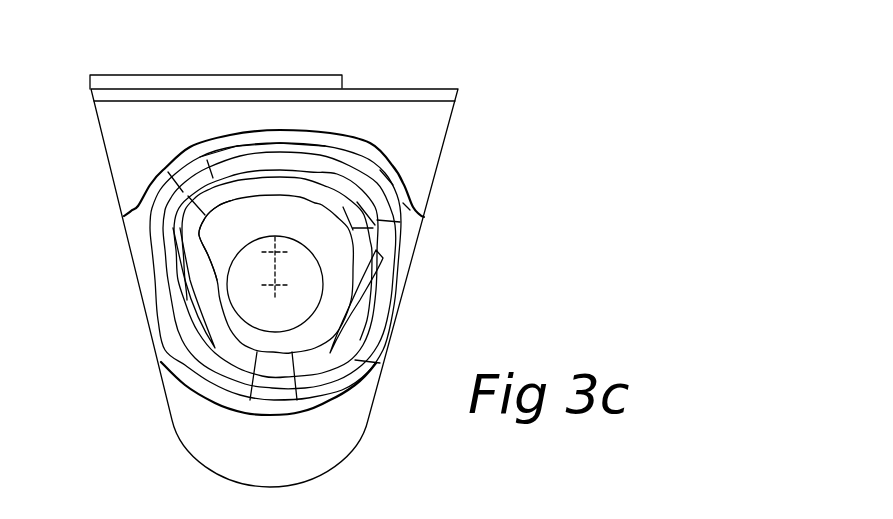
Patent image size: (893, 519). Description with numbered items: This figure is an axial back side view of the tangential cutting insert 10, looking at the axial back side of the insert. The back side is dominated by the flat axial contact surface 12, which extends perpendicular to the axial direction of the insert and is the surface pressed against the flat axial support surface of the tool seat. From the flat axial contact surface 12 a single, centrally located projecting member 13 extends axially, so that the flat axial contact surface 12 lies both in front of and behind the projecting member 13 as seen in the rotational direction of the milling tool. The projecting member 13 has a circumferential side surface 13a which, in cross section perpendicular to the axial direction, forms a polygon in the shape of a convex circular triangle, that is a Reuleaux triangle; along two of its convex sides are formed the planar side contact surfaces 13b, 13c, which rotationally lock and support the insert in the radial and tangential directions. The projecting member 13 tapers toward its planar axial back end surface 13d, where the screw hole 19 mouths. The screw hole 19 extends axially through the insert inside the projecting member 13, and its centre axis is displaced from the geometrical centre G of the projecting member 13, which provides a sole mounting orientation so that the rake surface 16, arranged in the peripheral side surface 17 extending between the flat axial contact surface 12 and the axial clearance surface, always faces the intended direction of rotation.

The tangential cutting insert 10 is at (478, 78).
The flat axial contact surface 12 is at (403, 131).
The projecting member 13 is at (383, 234).
The circumferential side surface 13a is at (213, 178).
The side contact surface 13b is at (370, 298).
The side contact surface 13c is at (185, 307).
The axial back end surface 13d is at (215, 253).
The rake surface 16 is at (277, 82).
The peripheral side surface 17 is at (430, 196).
The screw hole 19 is at (305, 308).
The geometrical centre G is at (280, 249).